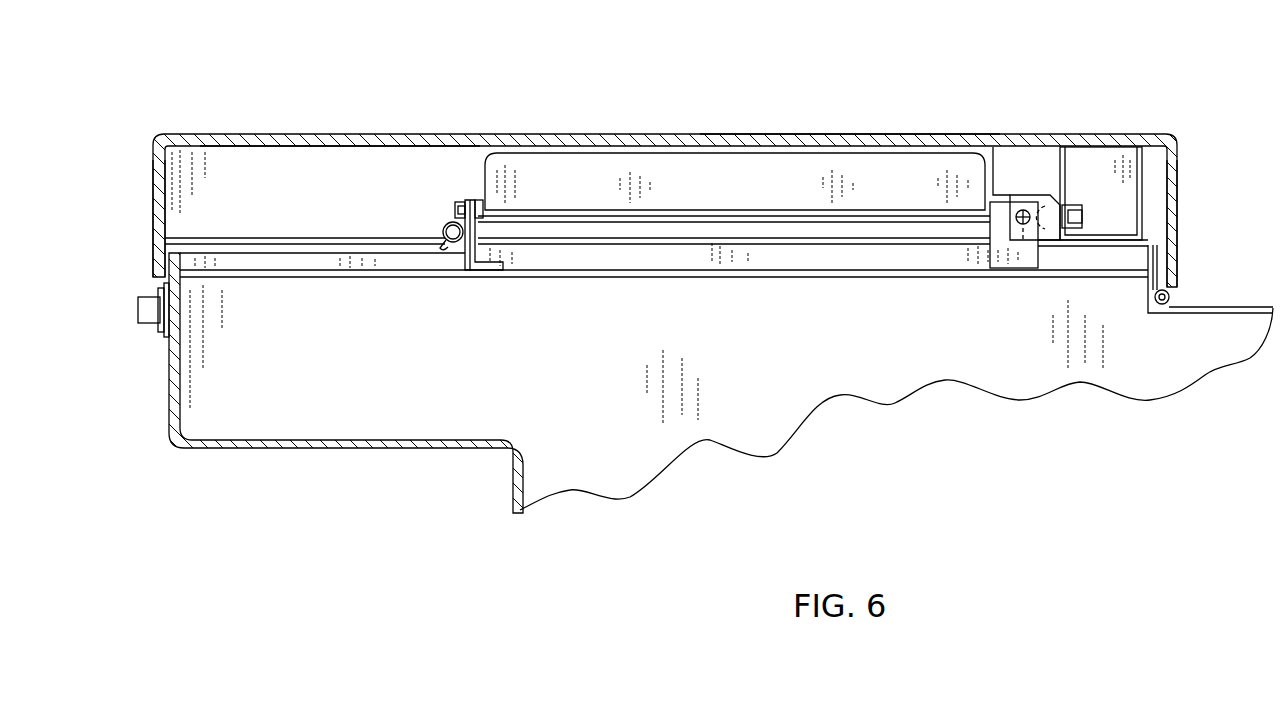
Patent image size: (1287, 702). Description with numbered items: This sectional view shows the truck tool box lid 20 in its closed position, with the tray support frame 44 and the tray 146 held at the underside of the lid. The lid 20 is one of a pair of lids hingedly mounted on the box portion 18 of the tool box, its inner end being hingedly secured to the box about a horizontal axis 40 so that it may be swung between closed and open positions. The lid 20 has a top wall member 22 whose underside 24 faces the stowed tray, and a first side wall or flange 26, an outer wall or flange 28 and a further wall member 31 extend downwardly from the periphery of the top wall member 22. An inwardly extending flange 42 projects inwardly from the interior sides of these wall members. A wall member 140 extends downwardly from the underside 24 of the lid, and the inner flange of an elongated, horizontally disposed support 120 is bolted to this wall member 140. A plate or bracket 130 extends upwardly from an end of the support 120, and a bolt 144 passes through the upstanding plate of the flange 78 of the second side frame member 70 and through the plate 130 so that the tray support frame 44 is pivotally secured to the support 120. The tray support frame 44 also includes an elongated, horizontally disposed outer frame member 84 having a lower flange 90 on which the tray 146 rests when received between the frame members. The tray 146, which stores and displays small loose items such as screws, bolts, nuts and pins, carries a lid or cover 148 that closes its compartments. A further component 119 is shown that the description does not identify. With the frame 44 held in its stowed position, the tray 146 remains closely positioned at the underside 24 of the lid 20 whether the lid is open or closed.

The box portion 18 is at (442, 453).
The lid 20 is at (430, 134).
The top wall member 22 is at (850, 143).
The underside 24 is at (312, 146).
The first side wall or flange 26 is at (350, 206).
The outer wall or flange 28 is at (163, 197).
The wall member 31 is at (1177, 215).
The horizontal axis 40 is at (1170, 295).
The inwardly extending flange 42 is at (278, 238).
The tray support frame 44 is at (665, 259).
The second side frame member 70 is at (850, 259).
The upstanding flange 78 is at (898, 258).
The outer frame member 84 is at (478, 252).
The lower flange 90 is at (492, 262).
The ring 119 is at (447, 228).
The support 120 is at (1052, 248).
The plate or bracket 130 is at (1037, 195).
The wall member 140 is at (1065, 170).
The bolt 144 is at (1018, 198).
The tray 146 is at (597, 160).
The lid or cover 148 is at (742, 180).